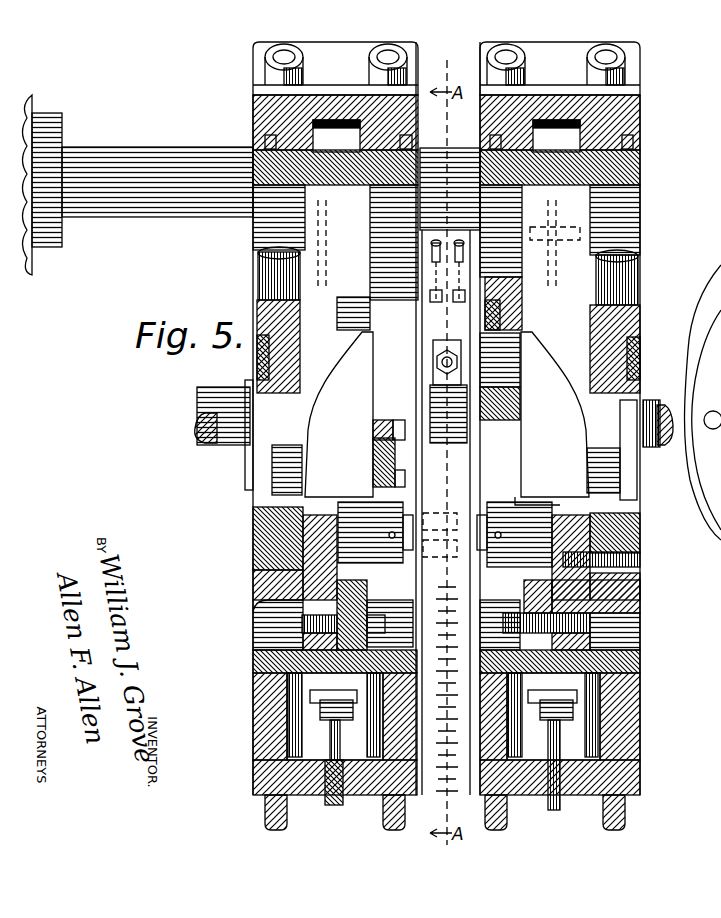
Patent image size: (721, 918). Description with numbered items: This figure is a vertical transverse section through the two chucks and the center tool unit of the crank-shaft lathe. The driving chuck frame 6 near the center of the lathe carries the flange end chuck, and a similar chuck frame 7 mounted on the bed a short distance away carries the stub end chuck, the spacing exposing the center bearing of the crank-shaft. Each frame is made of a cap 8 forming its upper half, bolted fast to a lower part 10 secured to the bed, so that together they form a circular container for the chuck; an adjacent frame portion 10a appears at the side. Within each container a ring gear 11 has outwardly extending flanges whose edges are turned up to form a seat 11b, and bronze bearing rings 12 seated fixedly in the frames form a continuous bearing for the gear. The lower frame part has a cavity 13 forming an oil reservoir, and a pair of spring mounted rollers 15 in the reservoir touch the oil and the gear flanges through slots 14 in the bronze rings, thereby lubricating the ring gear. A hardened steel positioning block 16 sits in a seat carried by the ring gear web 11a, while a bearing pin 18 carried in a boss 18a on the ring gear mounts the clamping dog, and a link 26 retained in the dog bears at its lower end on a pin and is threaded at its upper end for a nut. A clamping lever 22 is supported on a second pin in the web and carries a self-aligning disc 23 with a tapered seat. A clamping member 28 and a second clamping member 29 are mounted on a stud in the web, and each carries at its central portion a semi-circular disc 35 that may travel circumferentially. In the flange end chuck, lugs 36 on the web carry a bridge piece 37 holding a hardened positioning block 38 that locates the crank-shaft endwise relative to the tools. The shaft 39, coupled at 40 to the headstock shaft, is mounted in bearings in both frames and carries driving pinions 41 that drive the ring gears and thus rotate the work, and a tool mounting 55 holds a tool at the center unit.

The driving chuck frame 6 is at (250, 265).
The chuck frame 7 is at (645, 218).
The cap 8 is at (313, 100).
The lower part of chuck frame 10 is at (283, 800).
The adjacent frame portion 10a is at (703, 370).
The ring gear 11 is at (320, 660).
The ring gear web 11a is at (352, 588).
The seat 11b is at (255, 150).
The bronze bearing ring 12 is at (645, 146).
The cavity 13 is at (350, 745).
The slot 14 is at (698, 705).
The spring mounted roller 15 is at (337, 805).
The positioning block 16 is at (258, 522).
The bearing pin 18 is at (525, 520).
The boss 18a is at (516, 505).
The clamping lever 22 is at (258, 307).
The self-aligning disc 23 is at (256, 380).
The link 26 is at (280, 413).
The clamping member 28 is at (475, 470).
The second clamping member 29 is at (517, 289).
The semi-circular disc 35 is at (473, 320).
The lug 36 is at (362, 480).
The bridge piece 37 is at (366, 450).
The positioning block 38 is at (374, 420).
The shaft 39 is at (133, 207).
The coupling 40 is at (57, 152).
The driving pinion 41 is at (447, 246).
The tool mounting 55 is at (447, 262).